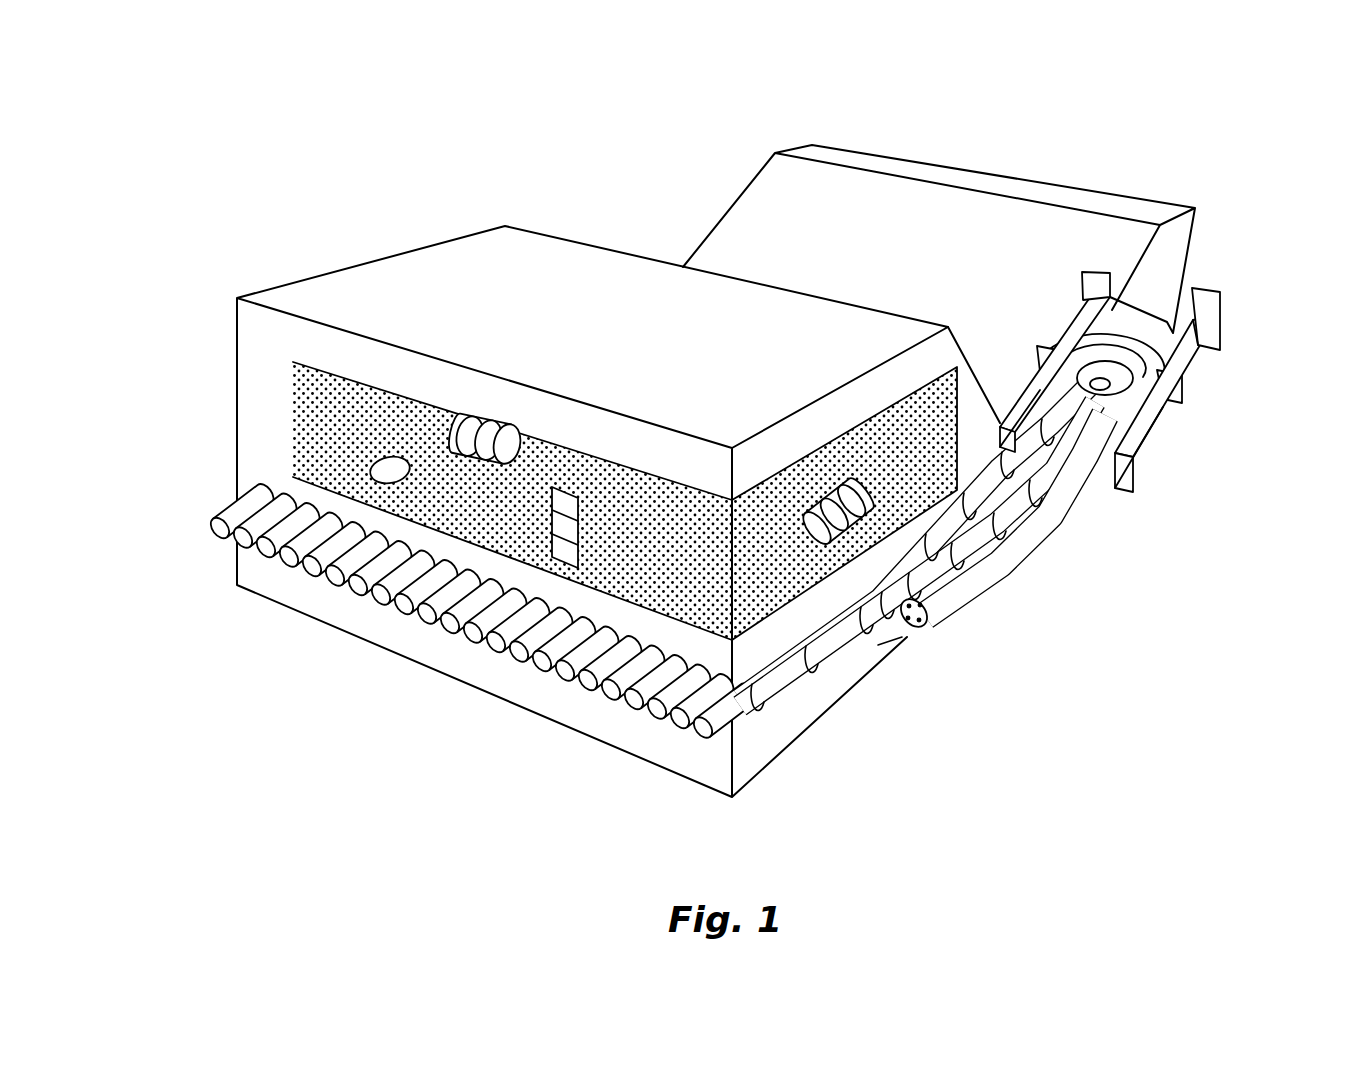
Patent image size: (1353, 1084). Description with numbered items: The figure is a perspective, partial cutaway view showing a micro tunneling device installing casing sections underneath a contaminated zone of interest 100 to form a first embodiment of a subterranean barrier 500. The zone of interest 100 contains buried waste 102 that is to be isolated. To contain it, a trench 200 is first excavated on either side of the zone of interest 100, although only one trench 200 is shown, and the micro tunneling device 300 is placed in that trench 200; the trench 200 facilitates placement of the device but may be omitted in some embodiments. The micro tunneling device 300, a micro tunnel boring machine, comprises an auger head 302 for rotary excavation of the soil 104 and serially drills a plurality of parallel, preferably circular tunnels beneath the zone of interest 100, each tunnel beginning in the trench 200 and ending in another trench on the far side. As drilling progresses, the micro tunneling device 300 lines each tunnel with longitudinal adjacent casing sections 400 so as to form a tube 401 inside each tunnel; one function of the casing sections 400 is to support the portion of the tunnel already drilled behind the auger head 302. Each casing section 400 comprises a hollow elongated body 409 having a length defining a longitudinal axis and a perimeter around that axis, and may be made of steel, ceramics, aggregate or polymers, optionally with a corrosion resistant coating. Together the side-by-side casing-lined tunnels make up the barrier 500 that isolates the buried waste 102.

The zone of interest 100 is at (318, 433).
The buried waste 102 is at (552, 560).
The soil 104 is at (880, 646).
The trench 200 is at (726, 212).
The micro tunneling device 300 is at (1150, 462).
The auger head 302 is at (924, 630).
The casing sections 400 is at (1007, 535).
The tube 401 is at (470, 638).
The hollow elongated body 409 is at (1056, 490).
The barrier 500 is at (328, 606).